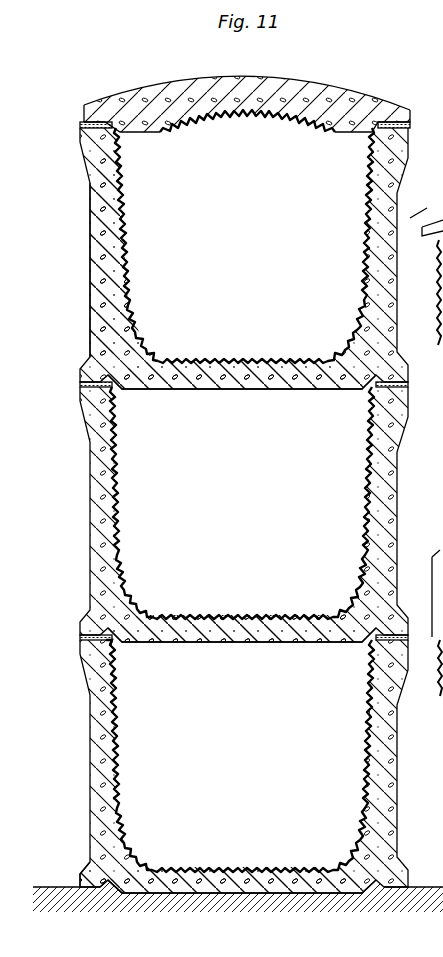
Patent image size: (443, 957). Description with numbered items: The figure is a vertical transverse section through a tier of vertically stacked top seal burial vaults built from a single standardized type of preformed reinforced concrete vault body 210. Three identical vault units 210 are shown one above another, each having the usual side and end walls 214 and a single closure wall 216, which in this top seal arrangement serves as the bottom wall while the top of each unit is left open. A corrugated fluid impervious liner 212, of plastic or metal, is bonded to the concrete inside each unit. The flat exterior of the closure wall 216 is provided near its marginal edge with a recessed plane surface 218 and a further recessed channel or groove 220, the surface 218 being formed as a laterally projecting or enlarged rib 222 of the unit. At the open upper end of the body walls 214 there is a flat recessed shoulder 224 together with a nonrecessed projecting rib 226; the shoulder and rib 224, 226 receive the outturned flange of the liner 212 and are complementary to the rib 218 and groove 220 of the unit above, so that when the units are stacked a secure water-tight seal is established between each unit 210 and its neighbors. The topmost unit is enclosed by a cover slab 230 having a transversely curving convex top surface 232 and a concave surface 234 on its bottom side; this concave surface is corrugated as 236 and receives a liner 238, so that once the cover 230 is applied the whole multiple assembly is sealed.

The vault body 210 is at (214, 537).
The fluid impervious liner 212 is at (125, 258).
The side and end walls 214 is at (110, 203).
The closure wall 216 is at (253, 376).
The recessed plane surface 218 is at (86, 889).
The recessed channel or groove 220 is at (108, 881).
The laterally projecting rib 222 is at (399, 887).
The recessed shoulder 224 is at (90, 636).
The projecting rib 226 is at (110, 644).
The cover slab 230 is at (245, 110).
The convex top surface 232 is at (181, 88).
The concave surface 234 is at (272, 118).
The corrugations 236 is at (202, 121).
The liner 238 is at (177, 128).